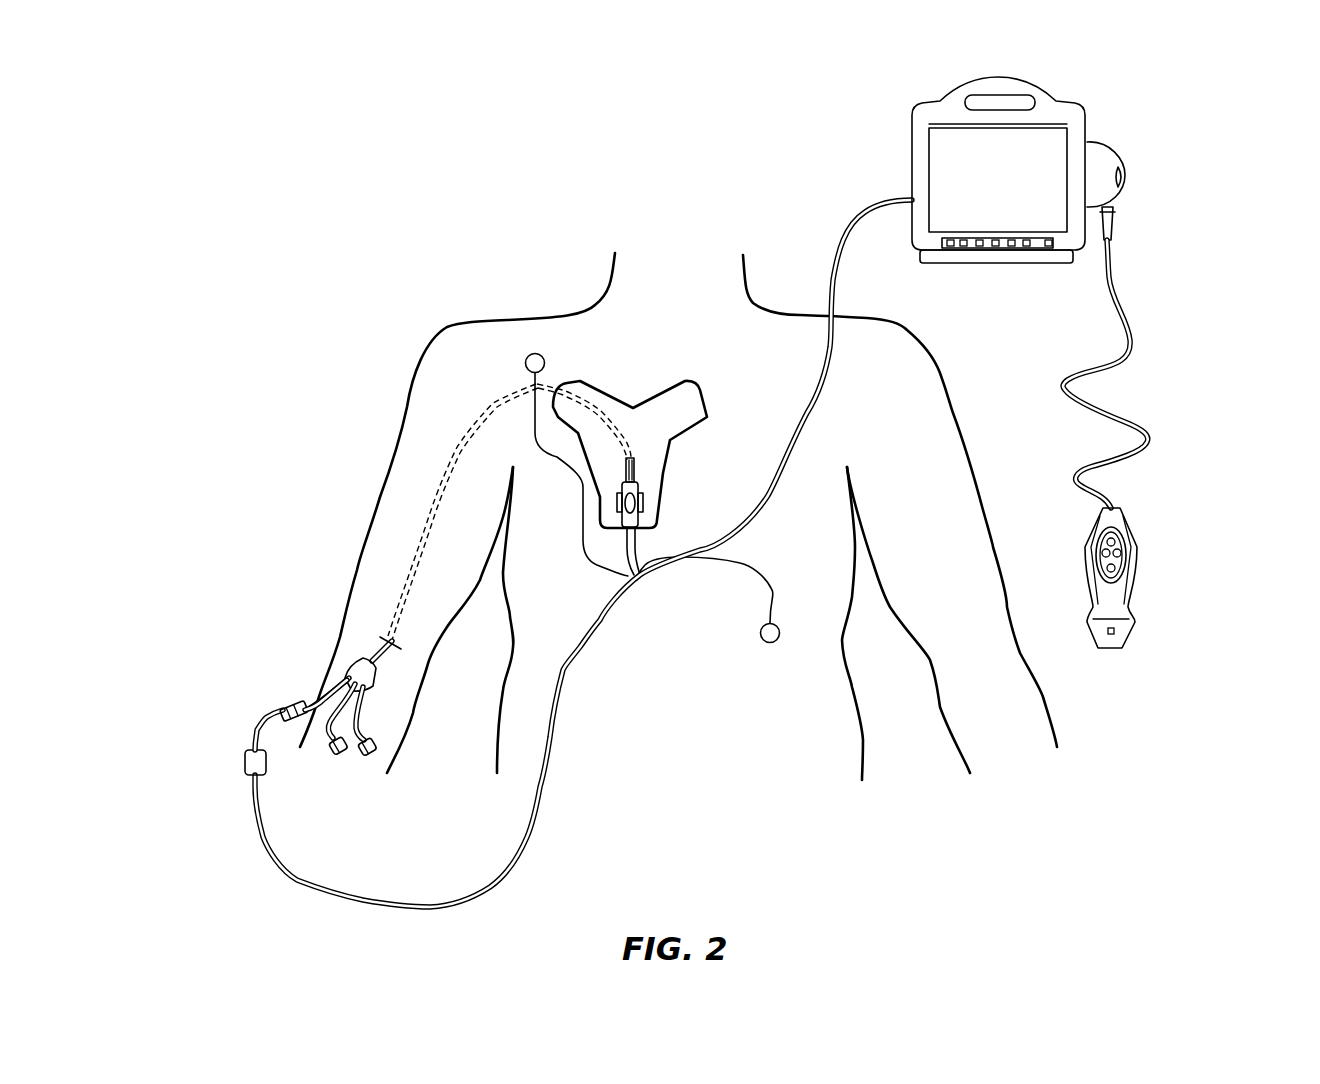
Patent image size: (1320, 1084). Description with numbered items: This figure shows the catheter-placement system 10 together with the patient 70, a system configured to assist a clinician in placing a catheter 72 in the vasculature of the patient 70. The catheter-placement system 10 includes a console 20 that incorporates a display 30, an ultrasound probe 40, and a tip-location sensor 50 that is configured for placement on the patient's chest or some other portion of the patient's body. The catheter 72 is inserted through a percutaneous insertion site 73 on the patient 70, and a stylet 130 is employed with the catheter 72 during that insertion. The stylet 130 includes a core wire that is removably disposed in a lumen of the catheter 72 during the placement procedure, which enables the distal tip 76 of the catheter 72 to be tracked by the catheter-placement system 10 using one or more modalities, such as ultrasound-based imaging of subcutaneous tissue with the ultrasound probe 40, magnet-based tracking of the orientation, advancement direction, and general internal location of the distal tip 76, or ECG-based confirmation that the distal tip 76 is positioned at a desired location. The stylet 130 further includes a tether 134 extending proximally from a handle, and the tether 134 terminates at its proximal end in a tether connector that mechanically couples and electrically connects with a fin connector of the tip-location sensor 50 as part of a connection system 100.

The catheter-placement system 10 is at (1172, 255).
The console 20 is at (1068, 109).
The display 30 is at (942, 157).
The ultrasound probe 40 is at (1128, 564).
The tip-location sensor 50 is at (700, 400).
The patient 70 is at (498, 317).
The catheter 72 is at (366, 642).
The percutaneous insertion site 73 is at (383, 640).
The distal tip 76 is at (623, 437).
The connection system 100 is at (612, 504).
The stylet 130 is at (238, 763).
The tether 134 is at (552, 728).